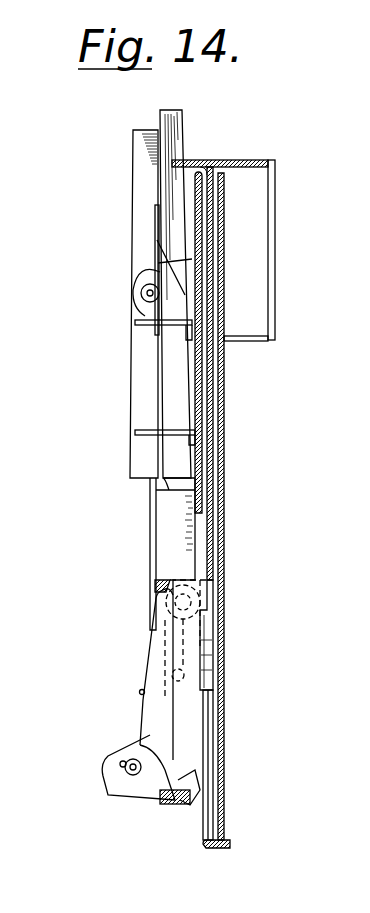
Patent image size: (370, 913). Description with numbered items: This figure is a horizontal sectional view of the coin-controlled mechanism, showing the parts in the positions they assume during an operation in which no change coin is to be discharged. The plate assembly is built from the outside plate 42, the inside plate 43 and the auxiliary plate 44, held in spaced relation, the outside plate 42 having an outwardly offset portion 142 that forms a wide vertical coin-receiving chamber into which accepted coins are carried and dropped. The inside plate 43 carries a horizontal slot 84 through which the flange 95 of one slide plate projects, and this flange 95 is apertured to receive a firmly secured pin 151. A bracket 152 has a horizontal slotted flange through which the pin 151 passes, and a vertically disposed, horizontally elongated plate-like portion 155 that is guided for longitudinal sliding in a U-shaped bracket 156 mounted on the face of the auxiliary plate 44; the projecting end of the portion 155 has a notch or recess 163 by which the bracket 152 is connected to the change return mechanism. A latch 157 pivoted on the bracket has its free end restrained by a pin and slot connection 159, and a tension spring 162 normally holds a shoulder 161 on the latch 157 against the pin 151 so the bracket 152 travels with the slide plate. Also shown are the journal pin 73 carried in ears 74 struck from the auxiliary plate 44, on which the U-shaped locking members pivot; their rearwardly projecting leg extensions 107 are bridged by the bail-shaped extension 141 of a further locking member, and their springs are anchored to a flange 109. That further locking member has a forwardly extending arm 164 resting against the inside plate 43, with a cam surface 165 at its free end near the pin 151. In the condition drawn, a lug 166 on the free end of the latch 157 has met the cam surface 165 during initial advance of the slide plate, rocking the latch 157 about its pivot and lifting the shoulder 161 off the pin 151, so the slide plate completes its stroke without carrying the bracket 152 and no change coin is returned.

The bail-shaped extension 141 is at (135, 140).
The leg extension 107 is at (177, 118).
The flange 109 is at (206, 162).
The outwardly offset portion 142 is at (275, 206).
The notch or recess 163 is at (156, 238).
The ears 74 is at (134, 272).
The journal pin 73 is at (146, 294).
The U-shaped bracket 156 is at (190, 362).
The auxiliary plate 44 is at (205, 427).
The plate-like portion 155 is at (148, 503).
The forwardly extending arm 164 is at (180, 562).
The bracket 152 is at (142, 622).
The pin 151 is at (195, 661).
The latch 157 is at (152, 682).
The tension spring 162 is at (140, 693).
The shoulder 161 is at (165, 772).
The flange 95 is at (211, 660).
The slot 84 is at (206, 748).
The outside plate 42 is at (222, 786).
The pin and slot connection 159 is at (128, 792).
The lug 166 is at (168, 806).
The cam surface 165 is at (192, 810).
The inside plate 43 is at (204, 843).